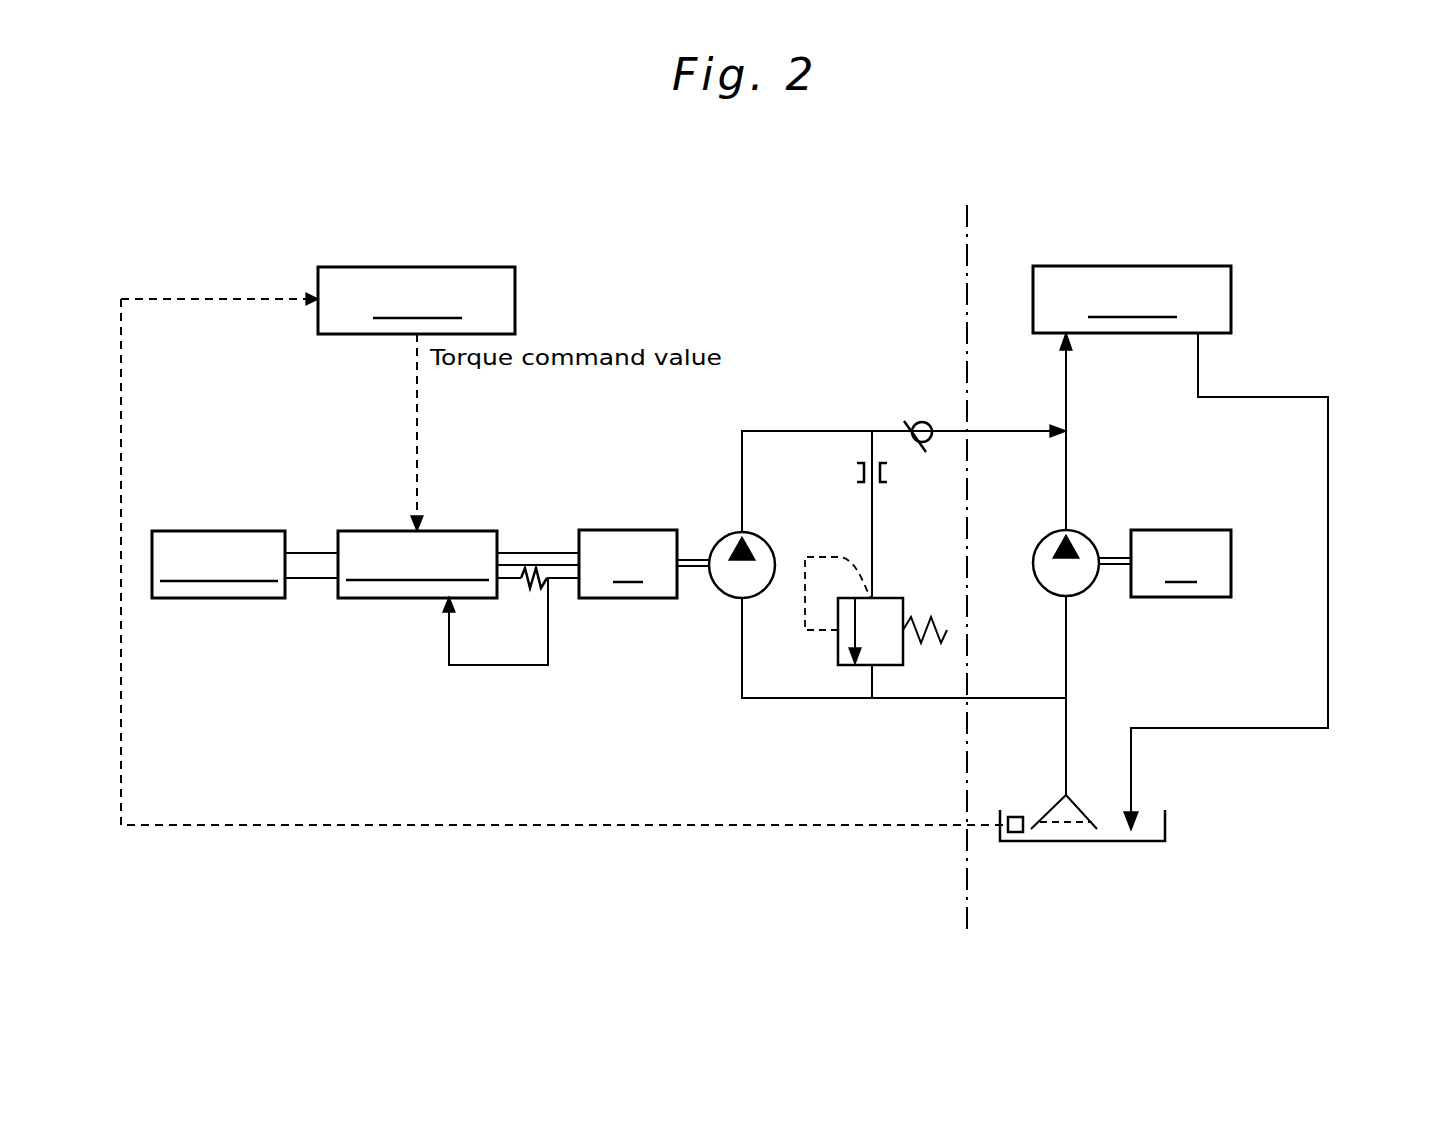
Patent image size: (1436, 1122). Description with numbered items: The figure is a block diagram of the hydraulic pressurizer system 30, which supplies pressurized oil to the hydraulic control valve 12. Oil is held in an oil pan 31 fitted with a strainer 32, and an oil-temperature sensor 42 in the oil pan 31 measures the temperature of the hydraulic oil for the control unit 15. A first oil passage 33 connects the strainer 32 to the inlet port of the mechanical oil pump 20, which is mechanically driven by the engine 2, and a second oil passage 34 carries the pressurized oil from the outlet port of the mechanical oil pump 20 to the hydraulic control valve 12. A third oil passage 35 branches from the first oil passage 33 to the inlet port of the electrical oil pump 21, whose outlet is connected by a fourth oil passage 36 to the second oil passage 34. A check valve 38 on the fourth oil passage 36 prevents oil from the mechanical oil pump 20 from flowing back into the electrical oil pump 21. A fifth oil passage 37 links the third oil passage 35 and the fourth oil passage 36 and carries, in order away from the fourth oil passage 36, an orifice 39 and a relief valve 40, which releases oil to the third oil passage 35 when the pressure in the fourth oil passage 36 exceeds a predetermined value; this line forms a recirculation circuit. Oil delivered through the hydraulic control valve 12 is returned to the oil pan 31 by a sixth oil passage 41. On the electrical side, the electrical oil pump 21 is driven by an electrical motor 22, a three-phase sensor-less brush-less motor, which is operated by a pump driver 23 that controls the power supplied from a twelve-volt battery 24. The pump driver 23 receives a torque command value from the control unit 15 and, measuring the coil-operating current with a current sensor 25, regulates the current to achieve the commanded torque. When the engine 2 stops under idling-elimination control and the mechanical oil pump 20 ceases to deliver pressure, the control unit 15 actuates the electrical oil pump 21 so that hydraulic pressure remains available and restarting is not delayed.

The engine 2 is at (1213, 530).
The hydraulic control valve 12 is at (1183, 266).
The control unit 15 is at (467, 267).
The mechanical oil pump 20 is at (1088, 593).
The electrical oil pump 21 is at (764, 541).
The electrical motor 22 is at (627, 530).
The pump driver 23 is at (372, 598).
The 12V battery 24 is at (240, 531).
The current sensor 25 is at (550, 582).
The hydraulic pressurizer system 30 is at (1355, 371).
The oil pan 31 is at (1150, 841).
The strainer 32 is at (1062, 829).
The first oil passage 33 is at (1066, 703).
The second oil passage 34 is at (1066, 450).
The third oil passage 35 is at (797, 698).
The fourth oil passage 36 is at (790, 431).
The fifth oil passage 37 is at (872, 527).
The check valve 38 is at (928, 420).
The orifice 39 is at (890, 474).
The relief valve 40 is at (896, 600).
The sixth oil passage 41 is at (1328, 525).
The oil-temperature sensor 42 is at (1015, 832).